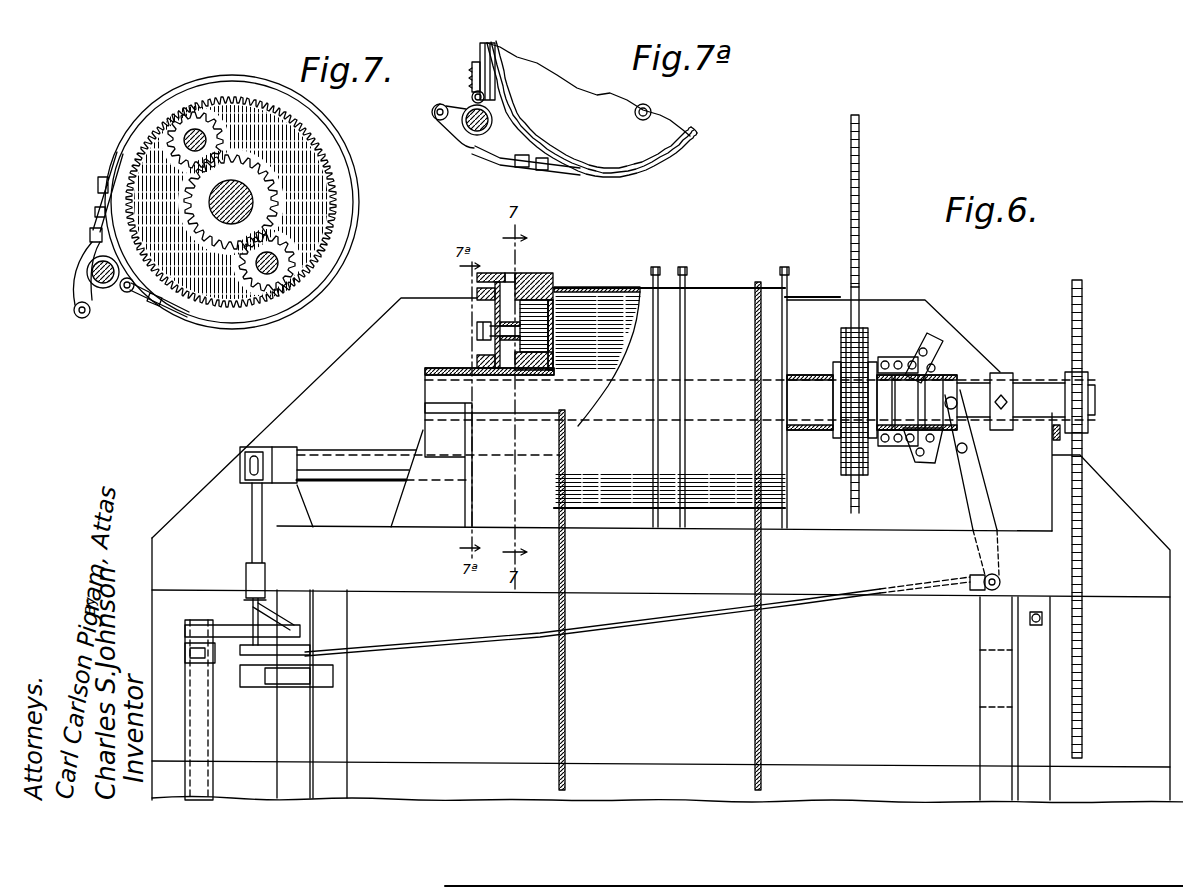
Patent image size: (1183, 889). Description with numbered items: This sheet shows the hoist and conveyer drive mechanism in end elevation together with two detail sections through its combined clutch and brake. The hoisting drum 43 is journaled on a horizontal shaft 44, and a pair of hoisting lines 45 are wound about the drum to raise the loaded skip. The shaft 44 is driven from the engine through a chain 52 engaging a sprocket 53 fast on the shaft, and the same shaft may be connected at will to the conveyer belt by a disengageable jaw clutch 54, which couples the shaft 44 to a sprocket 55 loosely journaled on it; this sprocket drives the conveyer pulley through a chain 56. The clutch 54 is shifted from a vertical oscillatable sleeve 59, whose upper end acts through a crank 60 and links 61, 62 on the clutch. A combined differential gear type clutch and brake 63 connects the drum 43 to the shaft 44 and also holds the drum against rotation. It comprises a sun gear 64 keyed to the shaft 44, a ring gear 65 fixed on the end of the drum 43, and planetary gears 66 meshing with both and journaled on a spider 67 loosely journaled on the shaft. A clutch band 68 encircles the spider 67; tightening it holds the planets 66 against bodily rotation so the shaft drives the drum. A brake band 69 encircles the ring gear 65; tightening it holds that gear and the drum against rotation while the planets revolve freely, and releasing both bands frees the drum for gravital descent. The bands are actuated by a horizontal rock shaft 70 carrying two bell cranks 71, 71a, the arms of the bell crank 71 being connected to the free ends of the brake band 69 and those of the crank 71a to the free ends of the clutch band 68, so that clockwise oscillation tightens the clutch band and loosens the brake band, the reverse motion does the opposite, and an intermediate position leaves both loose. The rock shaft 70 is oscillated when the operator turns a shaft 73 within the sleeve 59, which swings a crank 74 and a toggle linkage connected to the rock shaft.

In FIG. 6, the hoisting drum 43 is at (732, 490).
In FIG. 7, the horizontal shaft 44 is at (213, 202).
In FIG. 6, the horizontal shaft 44 is at (583, 400).
In FIG. 6, the hoisting lines 45 is at (559, 545).
In FIG. 6, the chain 52 is at (1083, 582).
In FIG. 6, the sprocket 53 is at (1080, 370).
In FIG. 6, the jaw clutch 54 is at (943, 332).
In FIG. 6, the sprocket 55 is at (858, 310).
In FIG. 6, the chain 56 is at (862, 214).
In FIG. 6, the vertical oscillatable sleeve 59 is at (212, 712).
In FIG. 6, the crank 60 is at (185, 651).
In FIG. 6, the link 61 is at (735, 612).
In FIG. 6, the link 62 is at (965, 482).
In FIG. 7, the combined differential gear type clutch and brake 63 is at (140, 105).
In FIG. 6, the combined differential gear type clutch and brake 63 is at (562, 274).
In FIG. 7, the sun gear 64 is at (262, 192).
In FIG. 6, the sun gear 64 is at (556, 364).
In FIG. 7, the ring gear 65 is at (340, 217).
In FIG. 6, the ring gear 65 is at (566, 292).
In FIG. 7, the planetary gears 66 is at (195, 113).
In FIG. 6, the planetary gears 66 is at (548, 351).
In FIG. 7A, the spider 67 is at (665, 128).
In FIG. 6, the spider 67 is at (490, 348).
In FIG. 7A, the clutch band 68 is at (660, 163).
In FIG. 6, the clutch band 68 is at (495, 272).
In FIG. 7, the brake band 69 is at (345, 140).
In FIG. 6, the brake band 69 is at (530, 272).
In FIG. 7, the rock shaft 70 is at (110, 290).
In FIG. 7A, the rock shaft 70 is at (466, 135).
In FIG. 6, the rock shaft 70 is at (345, 462).
In FIG. 7, the bell crank 71 is at (96, 316).
In FIG. 7A, the bell crank 71a is at (455, 107).
In FIG. 6, the shaft 73 is at (205, 738).
In FIG. 6, the crank 74 is at (232, 625).